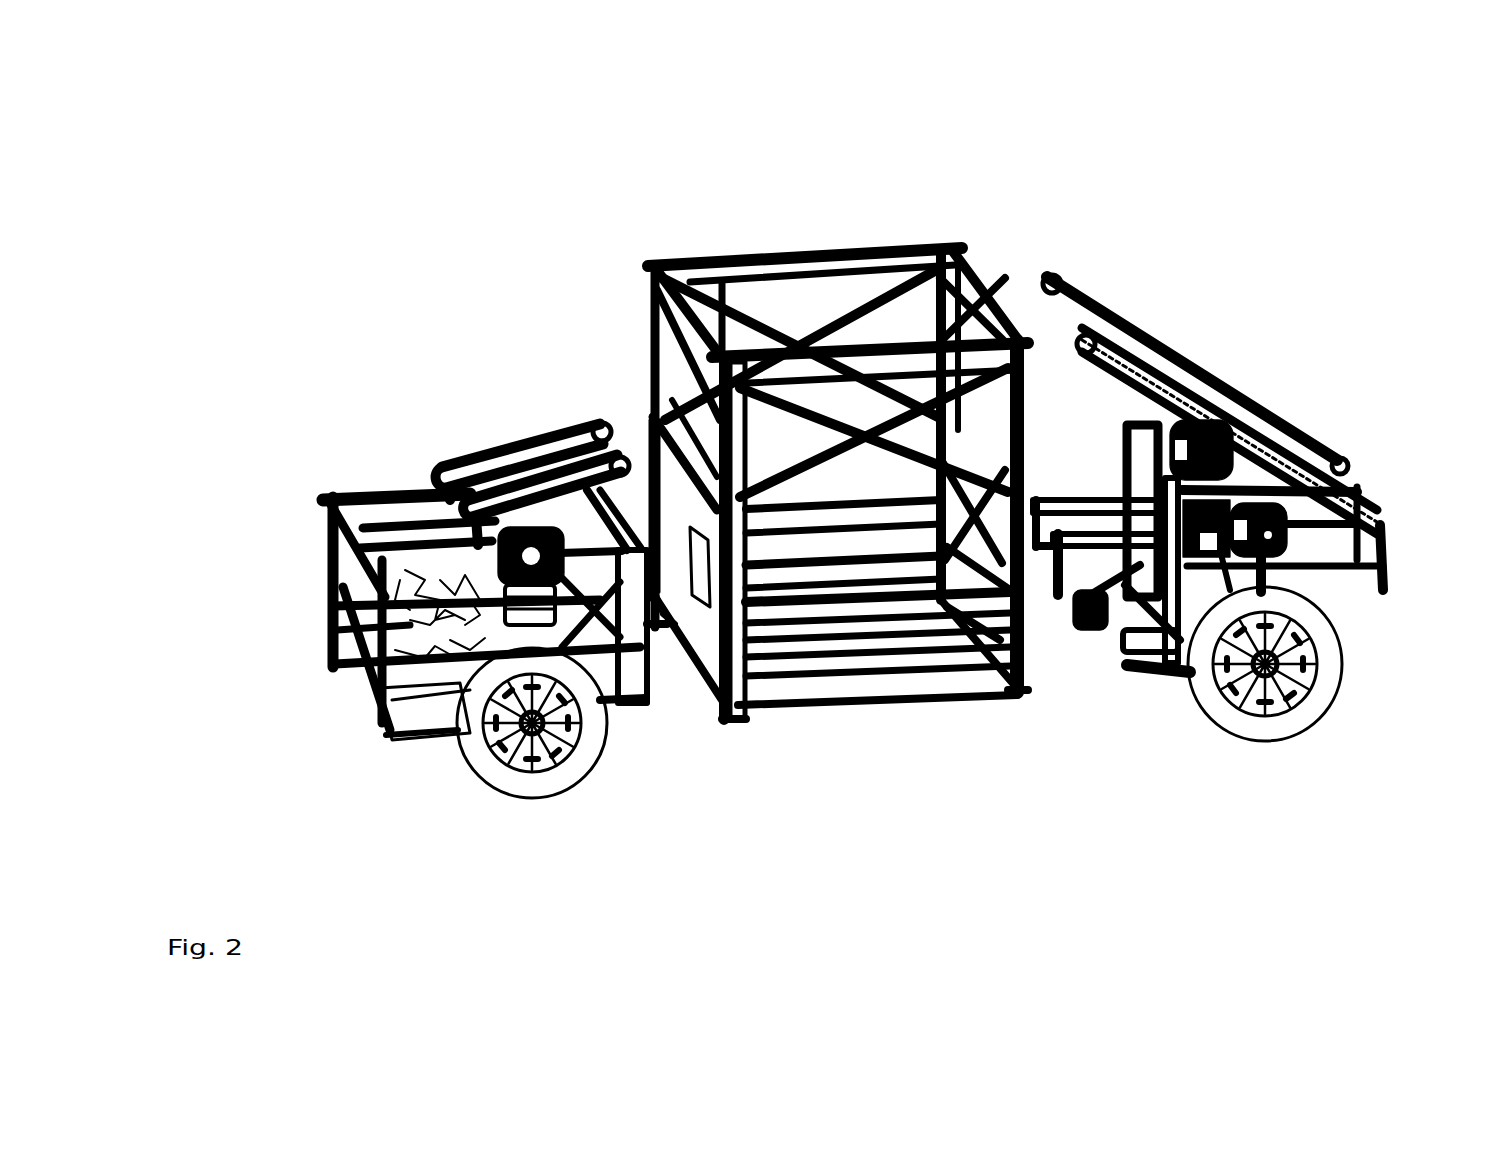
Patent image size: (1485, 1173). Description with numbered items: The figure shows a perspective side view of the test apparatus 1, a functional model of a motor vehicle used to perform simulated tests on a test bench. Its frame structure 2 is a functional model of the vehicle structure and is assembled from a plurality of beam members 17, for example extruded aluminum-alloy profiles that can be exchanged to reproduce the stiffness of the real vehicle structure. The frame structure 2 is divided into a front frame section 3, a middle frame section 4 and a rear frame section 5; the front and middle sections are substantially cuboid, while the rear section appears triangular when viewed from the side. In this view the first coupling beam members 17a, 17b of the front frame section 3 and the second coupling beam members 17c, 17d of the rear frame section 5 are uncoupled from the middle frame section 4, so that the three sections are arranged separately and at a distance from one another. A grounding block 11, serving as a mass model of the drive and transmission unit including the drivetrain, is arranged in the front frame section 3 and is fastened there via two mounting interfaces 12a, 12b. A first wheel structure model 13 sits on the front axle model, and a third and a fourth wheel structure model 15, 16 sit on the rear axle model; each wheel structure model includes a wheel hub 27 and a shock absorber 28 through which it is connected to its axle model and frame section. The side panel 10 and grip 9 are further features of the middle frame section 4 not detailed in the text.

The test apparatus 1 is at (312, 186).
The frame structure 2 is at (532, 240).
The front frame section 3 is at (340, 472).
The middle frame section 4 is at (968, 215).
The rear frame section 5 is at (1318, 388).
The handle 9 is at (695, 593).
The side panel 10 is at (668, 500).
The grounding block 11 is at (322, 550).
The mounting interface 12a is at (377, 723).
The mounting interface 12b is at (340, 660).
The first wheel structure model 13 is at (473, 703).
The third wheel structure model 15 is at (1322, 637).
The fourth wheel structure model 16 is at (1227, 480).
The beam member 17 is at (392, 562).
The first coupling beam member 17a is at (571, 455).
The first coupling beam member 17b is at (520, 462).
The second coupling beam member 17c is at (1172, 400).
The second coupling beam member 17d is at (1128, 332).
The wheel hub 27 is at (560, 748).
The shock absorber 28 is at (352, 605).